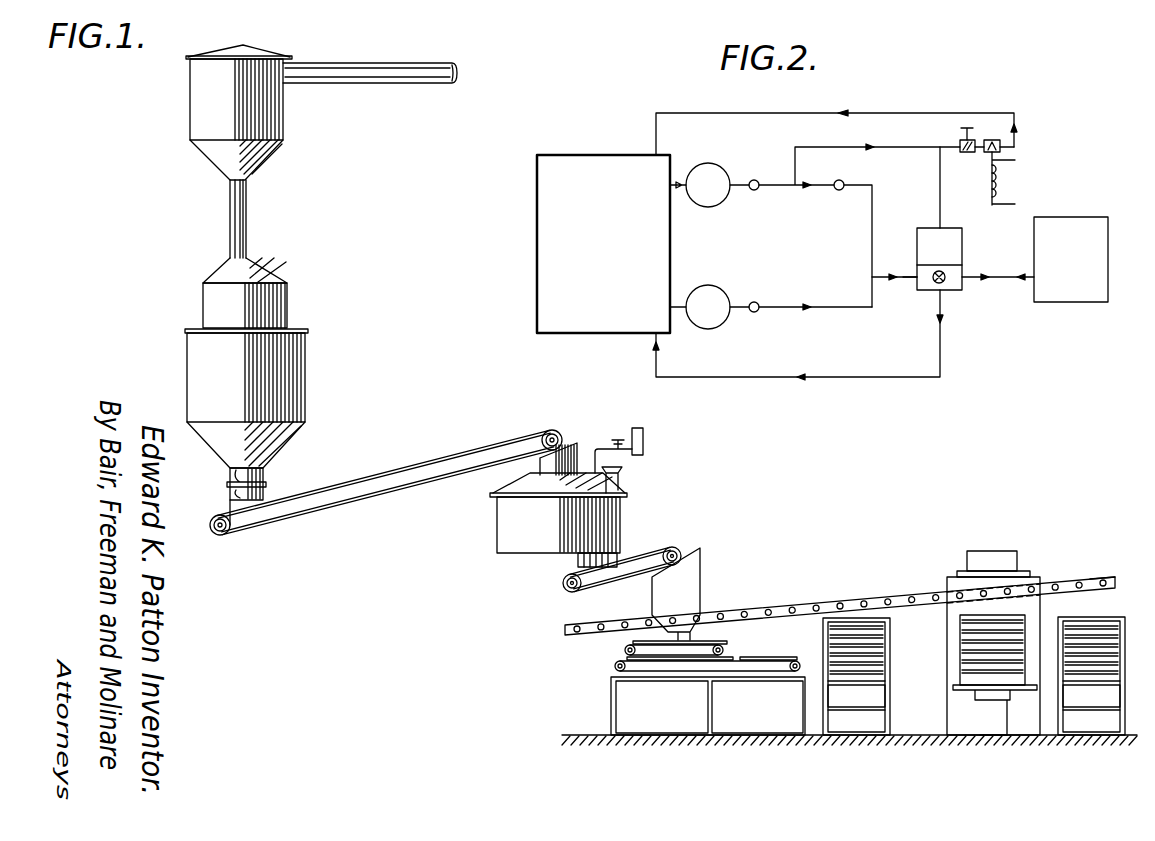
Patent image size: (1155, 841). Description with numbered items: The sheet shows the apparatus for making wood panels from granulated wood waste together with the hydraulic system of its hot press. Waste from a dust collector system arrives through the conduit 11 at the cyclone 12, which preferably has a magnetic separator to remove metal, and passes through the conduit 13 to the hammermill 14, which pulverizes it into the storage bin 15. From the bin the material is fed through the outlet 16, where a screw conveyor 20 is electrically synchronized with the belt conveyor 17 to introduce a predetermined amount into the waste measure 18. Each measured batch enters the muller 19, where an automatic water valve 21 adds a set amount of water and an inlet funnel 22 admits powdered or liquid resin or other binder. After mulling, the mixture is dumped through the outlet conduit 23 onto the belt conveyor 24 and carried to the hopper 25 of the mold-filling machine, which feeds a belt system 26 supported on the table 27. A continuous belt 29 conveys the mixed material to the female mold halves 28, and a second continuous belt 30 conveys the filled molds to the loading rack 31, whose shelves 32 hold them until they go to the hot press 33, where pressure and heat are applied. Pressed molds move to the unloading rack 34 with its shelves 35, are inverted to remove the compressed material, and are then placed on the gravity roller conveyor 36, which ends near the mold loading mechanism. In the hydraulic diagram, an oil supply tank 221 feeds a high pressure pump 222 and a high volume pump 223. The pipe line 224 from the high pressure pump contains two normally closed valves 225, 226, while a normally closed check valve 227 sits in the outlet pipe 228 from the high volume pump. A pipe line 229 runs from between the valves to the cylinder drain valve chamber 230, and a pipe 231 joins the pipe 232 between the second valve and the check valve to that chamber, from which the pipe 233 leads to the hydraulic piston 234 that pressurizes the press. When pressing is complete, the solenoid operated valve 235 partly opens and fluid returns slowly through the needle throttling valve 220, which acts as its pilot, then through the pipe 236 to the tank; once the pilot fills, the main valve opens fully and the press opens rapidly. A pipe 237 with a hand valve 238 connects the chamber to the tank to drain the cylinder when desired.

In FIG. 1, the conduit 11 is at (378, 79).
In FIG. 1, the cyclone 12 is at (283, 119).
In FIG. 1, the conduit 13 is at (246, 214).
In FIG. 1, the hammermill 14 is at (287, 299).
In FIG. 1, the storage bin 15 is at (305, 373).
In FIG. 1, the outlet 16 is at (263, 493).
In FIG. 1, the belt conveyor 17 is at (374, 470).
In FIG. 1, the waste measure 18 is at (583, 450).
In FIG. 1, the muller 19 is at (502, 522).
In FIG. 1, the screw conveyor 20 is at (232, 478).
In FIG. 1, the automatic water valve 21 is at (645, 441).
In FIG. 1, the inlet funnel 22 is at (622, 479).
In FIG. 1, the outlet conduit 23 is at (576, 560).
In FIG. 1, the belt conveyor 24 is at (650, 550).
In FIG. 1, the hopper 25 is at (702, 562).
In FIG. 1, the belt system 26 is at (606, 647).
In FIG. 1, the table 27 is at (610, 708).
In FIG. 1, the female mold halves 28 is at (622, 659).
In FIG. 1, the continuous belt 29 is at (720, 648).
In FIG. 1, the second continuous belt 30 is at (790, 660).
In FIG. 1, the loading rack 31 is at (890, 698).
In FIG. 1, the shelves 32 is at (846, 688).
In FIG. 1, the hot press 33 is at (946, 617).
In FIG. 1, the unloading rack 34 is at (1093, 718).
In FIG. 1, the shelves 35 is at (1081, 688).
In FIG. 1, the gravity roller conveyor 36 is at (1080, 579).
In FIG. 2, the needle throttling valve 220 is at (960, 142).
In FIG. 2, the oil supply tank 221 is at (580, 345).
In FIG. 2, the high pressure pump 222 is at (714, 155).
In FIG. 2, the high volume pump 223 is at (700, 328).
In FIG. 2, the pipe line 224 is at (778, 186).
In FIG. 2, the normally closed valve 225 is at (756, 178).
In FIG. 2, the normally closed valve 226 is at (838, 191).
In FIG. 2, the normally closed check valve 227 is at (756, 313).
In FIG. 2, the outlet pipe 228 is at (800, 308).
In FIG. 2, the pipe line 229 is at (930, 152).
In FIG. 2, the cylinder drain valve chamber 230 is at (962, 238).
In FIG. 2, the pipe 231 is at (912, 280).
In FIG. 2, the pipe 232 is at (872, 258).
In FIG. 2, the pipe 233 is at (970, 280).
In FIG. 2, the hydraulic piston 234 is at (1058, 303).
In FIG. 2, the solenoid operated valve 235 is at (1004, 147).
In FIG. 2, the pipe 236 is at (760, 113).
In FIG. 2, the pipe 237 is at (940, 347).
In FIG. 2, the hand valve 238 is at (946, 274).